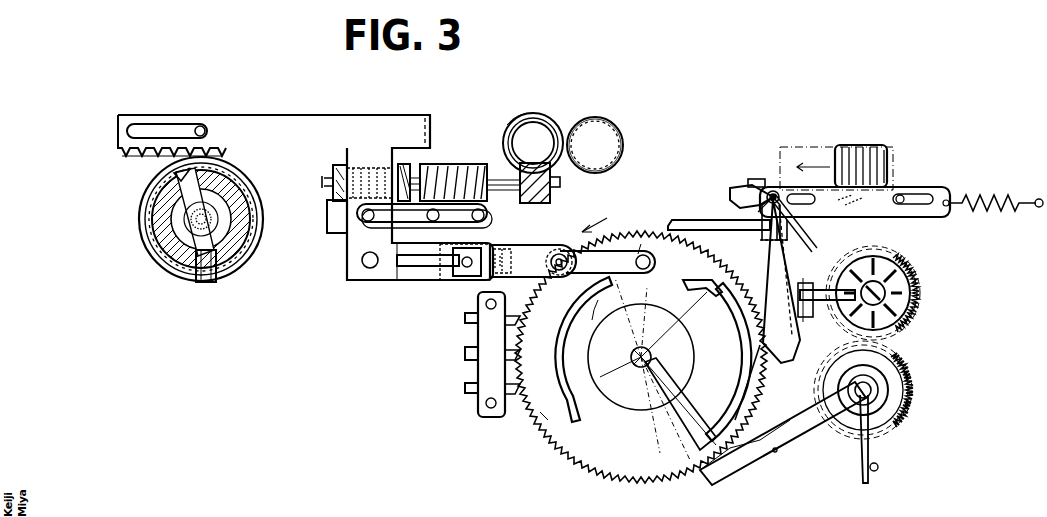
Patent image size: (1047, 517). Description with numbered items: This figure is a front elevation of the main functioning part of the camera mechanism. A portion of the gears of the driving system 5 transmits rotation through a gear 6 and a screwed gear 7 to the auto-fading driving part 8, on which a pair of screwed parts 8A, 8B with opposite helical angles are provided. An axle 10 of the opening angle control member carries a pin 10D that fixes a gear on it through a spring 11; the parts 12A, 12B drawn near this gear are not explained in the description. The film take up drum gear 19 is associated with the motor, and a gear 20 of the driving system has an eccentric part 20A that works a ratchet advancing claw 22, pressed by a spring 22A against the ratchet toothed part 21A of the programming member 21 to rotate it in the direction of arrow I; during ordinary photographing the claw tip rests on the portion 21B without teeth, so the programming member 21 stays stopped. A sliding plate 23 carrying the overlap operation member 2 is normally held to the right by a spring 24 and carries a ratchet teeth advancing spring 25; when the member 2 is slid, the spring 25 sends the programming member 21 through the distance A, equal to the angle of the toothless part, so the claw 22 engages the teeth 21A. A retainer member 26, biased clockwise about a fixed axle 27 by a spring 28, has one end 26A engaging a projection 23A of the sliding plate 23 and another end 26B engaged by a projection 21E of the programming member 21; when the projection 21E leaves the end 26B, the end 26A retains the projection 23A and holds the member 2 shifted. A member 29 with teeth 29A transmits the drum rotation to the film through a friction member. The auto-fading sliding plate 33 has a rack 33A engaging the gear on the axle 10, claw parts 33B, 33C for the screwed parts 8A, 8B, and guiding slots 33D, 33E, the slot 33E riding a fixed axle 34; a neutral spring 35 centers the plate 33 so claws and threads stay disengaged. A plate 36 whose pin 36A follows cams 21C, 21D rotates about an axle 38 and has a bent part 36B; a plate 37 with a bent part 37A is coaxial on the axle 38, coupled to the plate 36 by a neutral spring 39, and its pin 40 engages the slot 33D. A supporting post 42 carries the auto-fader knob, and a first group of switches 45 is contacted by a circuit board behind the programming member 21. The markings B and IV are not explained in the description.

The overlap operation member 2 is at (870, 144).
The portion of the gears of the driving system 5 is at (598, 132).
The gear 6 is at (574, 120).
The screwed gear 7 is at (542, 118).
The auto-fading driving part 8 is at (506, 176).
The screwed part 8A is at (460, 163).
The screwed part 8B is at (338, 178).
The axle of the opening angle control member 10 is at (242, 222).
The pin 10D is at (212, 270).
The spring 11 is at (137, 240).
The pawl 12A is at (178, 180).
The pawl 12B is at (190, 252).
The film take up drum gear 19 is at (920, 290).
The gear 20 is at (908, 362).
The eccentric part 20A is at (885, 393).
The programming member 21 is at (598, 448).
The ratchet toothed part 21A is at (610, 478).
The portion without ratchet teeth 21B is at (672, 476).
The cam 21C is at (730, 364).
The cam 21D is at (543, 415).
The projection 21E is at (796, 360).
The ratchet advancing claw 22 is at (755, 466).
The spring 22A is at (870, 452).
The sliding plate 23 is at (890, 190).
The projection 23A is at (775, 195).
The spring 24 is at (990, 190).
The ratchet teeth advancing spring 25 is at (705, 220).
The retainer member 26 is at (770, 238).
The end of the retainer member 26A is at (756, 180).
The other end of the retainer member 26B is at (748, 392).
The fixed axle 27 is at (826, 150).
The spring 28 is at (815, 240).
The member for transmitting rotation 29 is at (892, 270).
The teeth 29A is at (900, 316).
The auto-fading sliding plate 33 is at (288, 138).
The rack 33A is at (140, 160).
The claw part 33B is at (528, 134).
The claw part 33C is at (333, 212).
The guiding slot 33D is at (400, 278).
The guiding slot 33E is at (160, 128).
The fixed axle 34 is at (204, 130).
The neutral spring 35 is at (438, 216).
The plate 36 is at (646, 256).
The pin 36A is at (712, 293).
The bent part 36B is at (558, 252).
The plate 37 is at (538, 272).
The bent part 37A is at (478, 295).
The axle 38 is at (590, 236).
The neutral spring 39 is at (440, 270).
The pin 40 is at (465, 278).
The supporting post 42 is at (362, 262).
The first group of switches 45 is at (485, 404).
The distance A is at (670, 213).
The dimension B is at (210, 85).
The arrow direction I is at (597, 208).
The direction IV is at (743, 307).